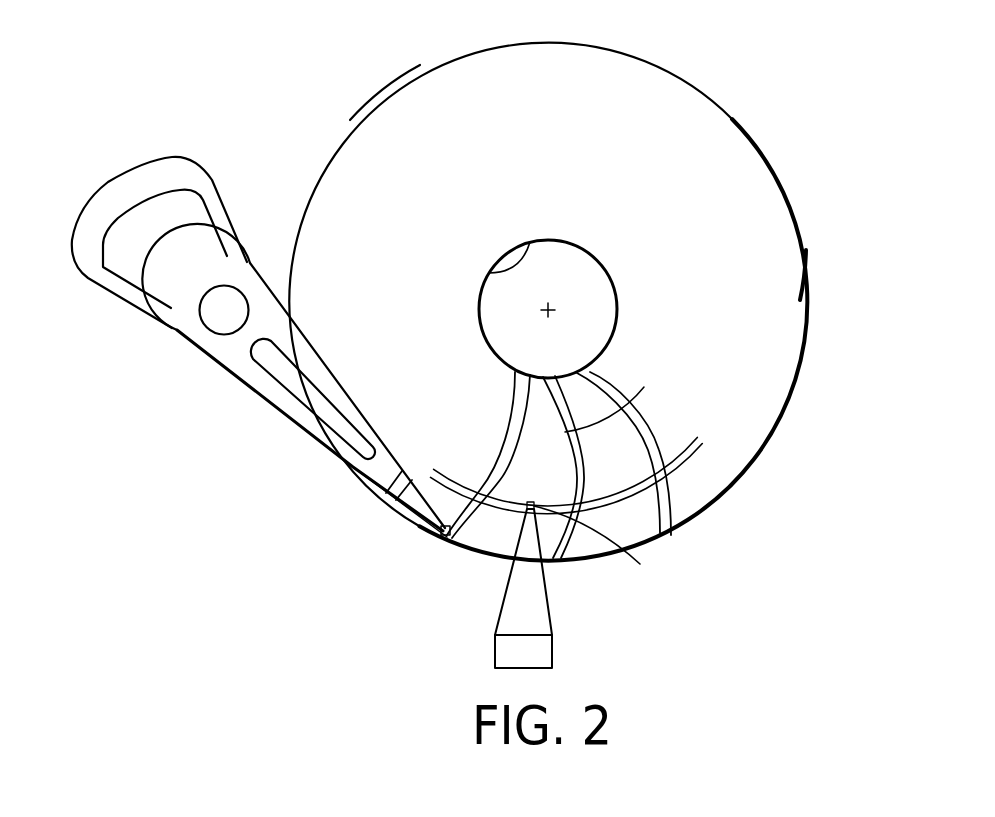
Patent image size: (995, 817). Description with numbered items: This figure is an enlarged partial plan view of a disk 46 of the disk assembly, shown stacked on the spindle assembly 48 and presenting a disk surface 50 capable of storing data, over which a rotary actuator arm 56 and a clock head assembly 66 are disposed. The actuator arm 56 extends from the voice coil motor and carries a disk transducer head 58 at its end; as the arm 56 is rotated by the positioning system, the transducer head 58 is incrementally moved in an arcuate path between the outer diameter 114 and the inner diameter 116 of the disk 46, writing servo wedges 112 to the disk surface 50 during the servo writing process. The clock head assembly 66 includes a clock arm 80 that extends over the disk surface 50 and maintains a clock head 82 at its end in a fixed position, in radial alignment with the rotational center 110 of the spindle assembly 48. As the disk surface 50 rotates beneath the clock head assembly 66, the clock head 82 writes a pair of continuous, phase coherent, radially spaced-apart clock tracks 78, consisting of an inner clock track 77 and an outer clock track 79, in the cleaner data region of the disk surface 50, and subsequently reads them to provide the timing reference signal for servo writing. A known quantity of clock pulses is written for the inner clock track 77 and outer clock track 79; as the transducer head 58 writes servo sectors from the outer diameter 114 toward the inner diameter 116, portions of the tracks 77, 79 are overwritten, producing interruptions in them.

The disk 46 is at (758, 128).
The spindle assembly 48 is at (622, 256).
The disk surface 50 is at (788, 253).
The actuator arm 56 is at (227, 378).
The disk transducer head 58 is at (442, 534).
The clock head assembly 66 is at (495, 585).
The inner clock track 77 is at (678, 446).
The pair of clock tracks 78 is at (623, 456).
The outer clock track 79 is at (687, 452).
The clock arm 80 is at (549, 613).
The clock head 82 is at (640, 564).
The rotational center 110 is at (553, 308).
The servo wedges 112 is at (625, 409).
The outer diameter 114 is at (388, 99).
The inner diameter 116 is at (526, 258).